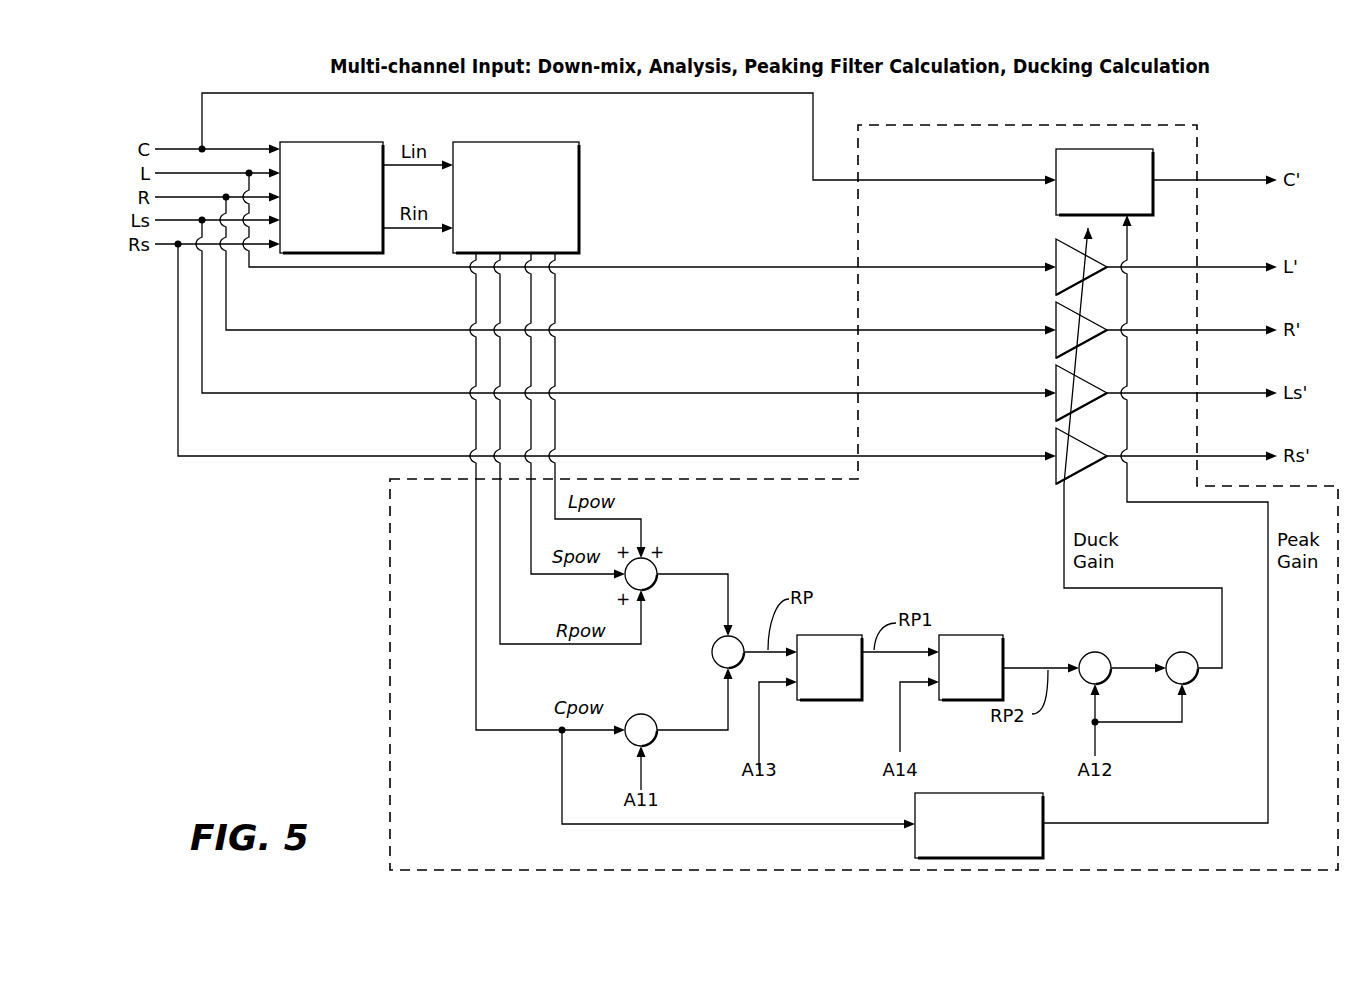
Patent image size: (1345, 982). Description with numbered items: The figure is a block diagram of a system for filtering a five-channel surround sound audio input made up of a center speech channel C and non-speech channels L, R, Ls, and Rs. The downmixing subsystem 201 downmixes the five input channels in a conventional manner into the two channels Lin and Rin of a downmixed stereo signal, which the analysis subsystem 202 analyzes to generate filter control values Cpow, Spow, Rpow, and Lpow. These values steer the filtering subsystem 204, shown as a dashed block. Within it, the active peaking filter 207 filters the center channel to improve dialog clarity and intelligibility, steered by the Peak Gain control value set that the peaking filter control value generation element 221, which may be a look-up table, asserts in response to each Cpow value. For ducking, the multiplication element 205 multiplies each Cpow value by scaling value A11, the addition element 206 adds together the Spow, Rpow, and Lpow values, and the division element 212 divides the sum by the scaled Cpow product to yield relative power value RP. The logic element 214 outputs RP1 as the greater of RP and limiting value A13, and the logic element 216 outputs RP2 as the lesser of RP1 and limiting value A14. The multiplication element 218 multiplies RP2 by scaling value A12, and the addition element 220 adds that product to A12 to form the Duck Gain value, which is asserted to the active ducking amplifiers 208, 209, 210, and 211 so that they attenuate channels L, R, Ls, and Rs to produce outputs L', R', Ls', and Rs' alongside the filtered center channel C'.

The downmixing subsystem 201 is at (329, 142).
The analysis subsystem 202 is at (498, 142).
The filtering subsystem 204 is at (388, 563).
The multiplication element 205 is at (641, 714).
The addition element 206 is at (655, 564).
The active peaking filter 207 is at (1056, 169).
The active ducking amplifier 208 is at (1056, 262).
The active ducking amplifier 209 is at (1056, 325).
The active ducking amplifier 210 is at (1056, 388).
The active ducking amplifier 211 is at (1056, 451).
The division element 212 is at (719, 640).
The logic element 214 is at (810, 635).
The logic element 216 is at (951, 635).
The multiplication element 218 is at (1092, 652).
The addition element 220 is at (1179, 652).
The peaking filter control value generation element 221 is at (993, 793).